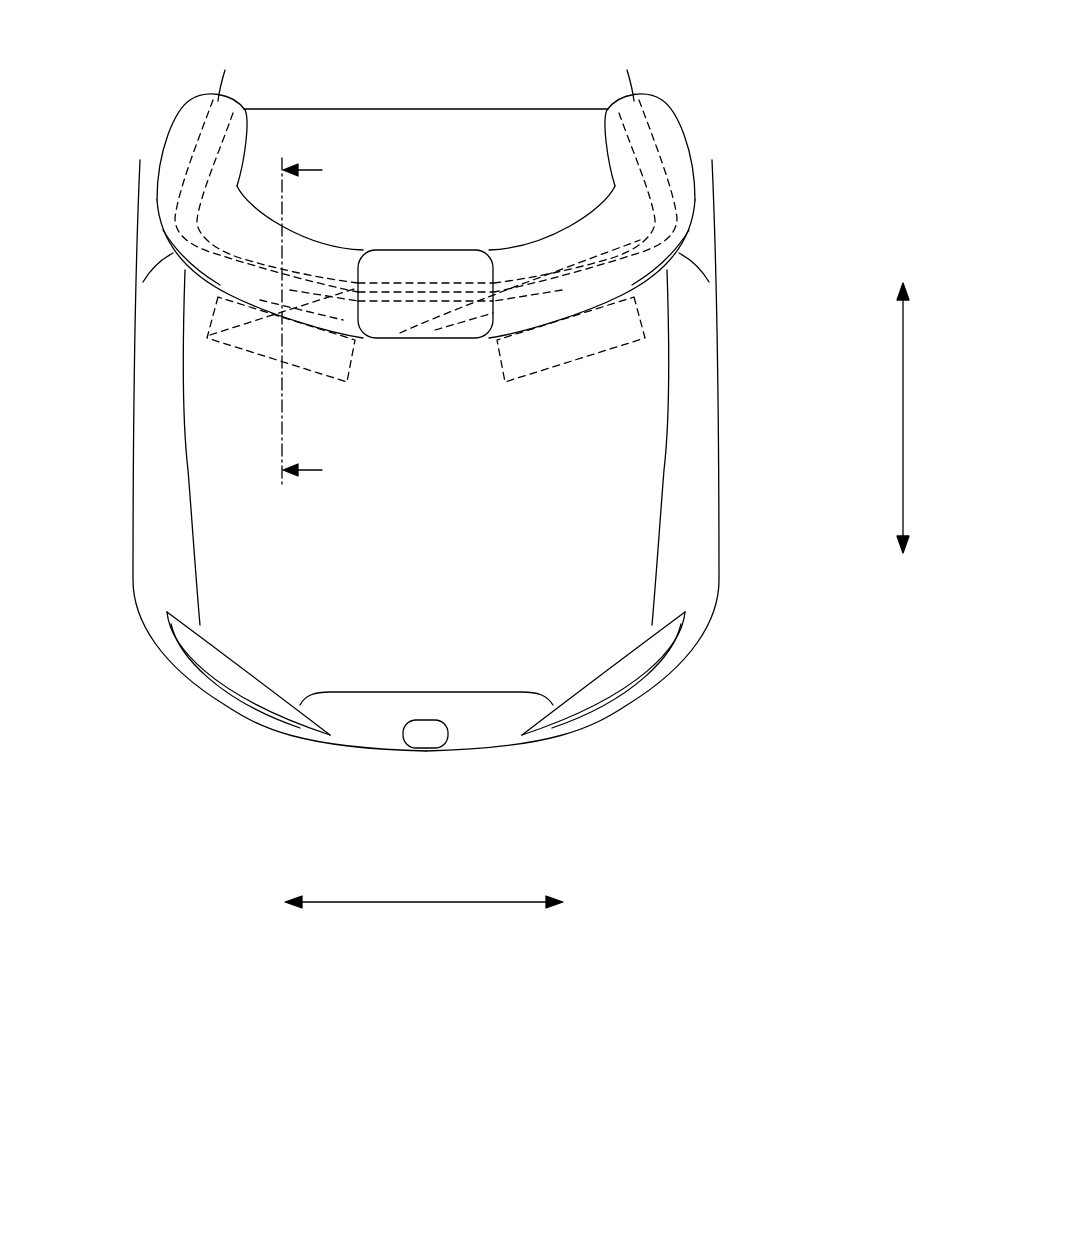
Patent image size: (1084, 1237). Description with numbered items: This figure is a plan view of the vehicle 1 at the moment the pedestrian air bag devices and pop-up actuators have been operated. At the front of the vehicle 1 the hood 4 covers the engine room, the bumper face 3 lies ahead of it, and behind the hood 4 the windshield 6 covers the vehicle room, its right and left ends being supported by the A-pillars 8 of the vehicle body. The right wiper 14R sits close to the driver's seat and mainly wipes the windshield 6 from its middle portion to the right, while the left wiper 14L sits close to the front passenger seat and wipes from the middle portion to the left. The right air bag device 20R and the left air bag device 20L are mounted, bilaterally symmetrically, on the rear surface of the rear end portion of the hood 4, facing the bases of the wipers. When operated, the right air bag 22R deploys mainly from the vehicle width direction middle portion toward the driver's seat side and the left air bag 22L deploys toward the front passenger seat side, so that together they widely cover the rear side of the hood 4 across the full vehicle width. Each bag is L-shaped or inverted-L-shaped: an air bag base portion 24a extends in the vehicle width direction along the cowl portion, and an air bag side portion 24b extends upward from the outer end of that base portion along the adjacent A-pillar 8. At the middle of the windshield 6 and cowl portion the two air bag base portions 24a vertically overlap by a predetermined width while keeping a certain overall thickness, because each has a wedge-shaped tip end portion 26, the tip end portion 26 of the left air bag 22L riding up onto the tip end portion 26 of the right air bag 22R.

The vehicle 1 is at (676, 60).
The bumper face 3 is at (380, 730).
The hood 4 is at (645, 498).
The windshield 6 is at (463, 143).
The A-pillar 8 is at (195, 180).
The right wiper 14R is at (357, 347).
The left wiper 14L is at (520, 340).
The right air bag device 20R is at (207, 330).
The left air bag device 20L is at (645, 330).
The right air bag 22R is at (207, 268).
The left air bag 22L is at (645, 268).
The air bag base portion 24a is at (332, 250).
The air bag side portion 24b is at (193, 137).
The tip end portion 26 is at (428, 262).